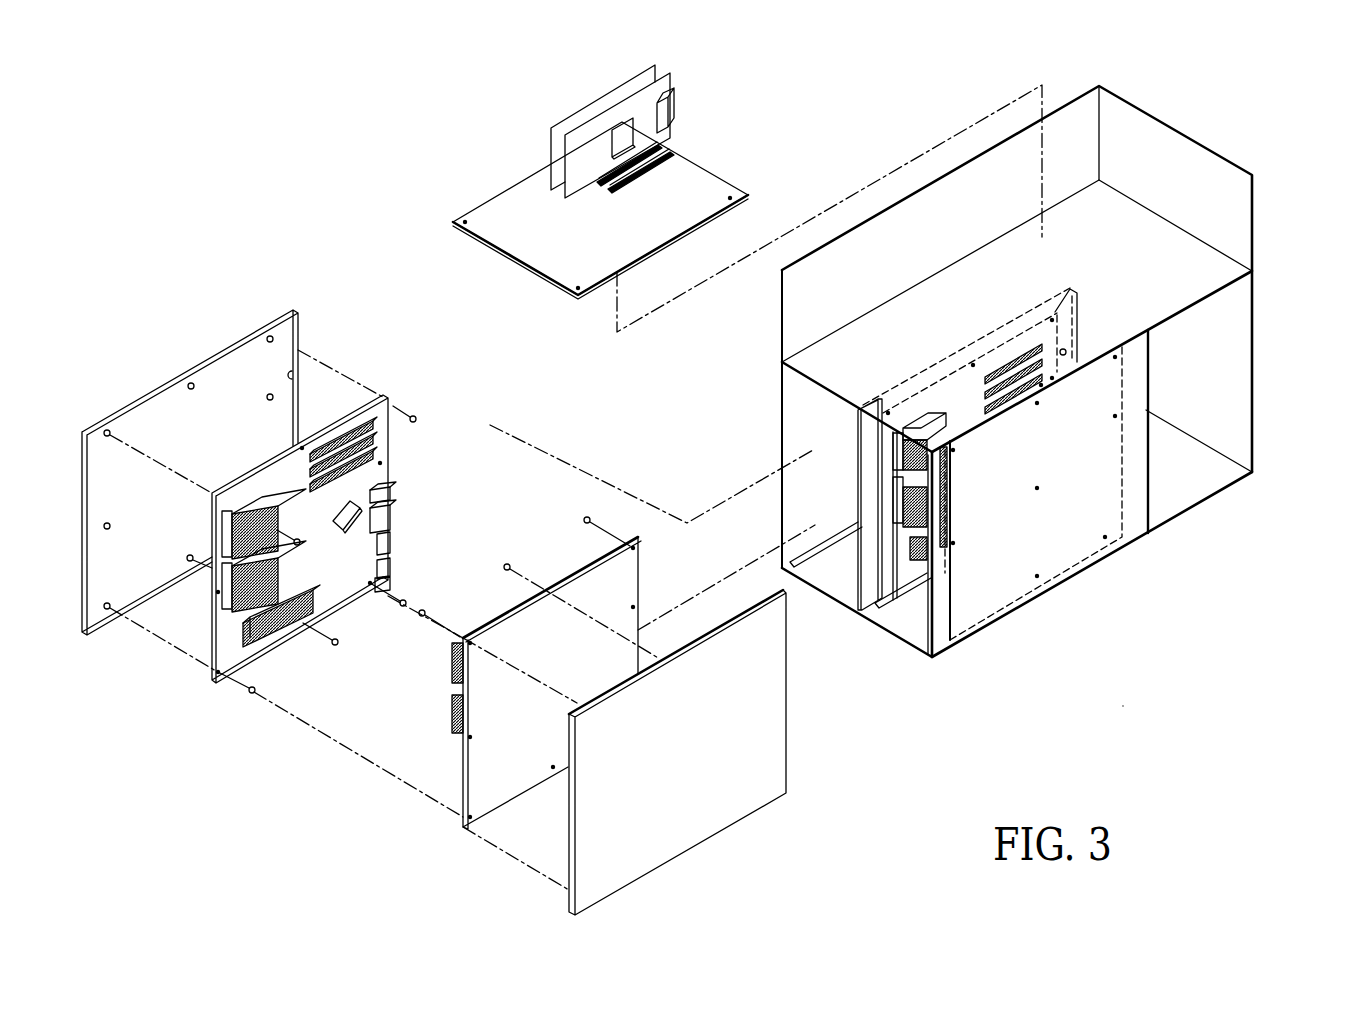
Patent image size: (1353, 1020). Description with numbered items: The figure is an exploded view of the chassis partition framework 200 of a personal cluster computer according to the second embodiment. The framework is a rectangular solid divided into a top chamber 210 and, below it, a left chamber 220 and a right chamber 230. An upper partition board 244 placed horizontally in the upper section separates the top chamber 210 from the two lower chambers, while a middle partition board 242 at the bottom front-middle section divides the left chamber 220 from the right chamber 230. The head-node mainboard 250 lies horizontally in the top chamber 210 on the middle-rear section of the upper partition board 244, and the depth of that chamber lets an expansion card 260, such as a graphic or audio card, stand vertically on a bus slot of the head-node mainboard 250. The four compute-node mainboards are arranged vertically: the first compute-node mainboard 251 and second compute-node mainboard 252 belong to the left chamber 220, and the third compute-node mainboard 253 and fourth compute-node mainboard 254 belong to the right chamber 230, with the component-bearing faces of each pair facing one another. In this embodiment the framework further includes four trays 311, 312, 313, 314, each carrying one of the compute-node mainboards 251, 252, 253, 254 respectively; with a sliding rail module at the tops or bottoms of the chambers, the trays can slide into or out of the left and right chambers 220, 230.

The chassis partition framework 200 is at (1126, 708).
The top chamber 210 is at (1158, 150).
The left chamber 220 is at (814, 414).
The right chamber 230 is at (914, 610).
The middle partition board 242 is at (853, 482).
The upper partition board 244 is at (1222, 258).
The head-node mainboard 250 is at (503, 210).
The first compute-node mainboard 251 is at (327, 590).
The second compute-node mainboard 252 is at (497, 637).
The third compute-node mainboard 253 is at (897, 599).
The fourth compute-node mainboard 254 is at (1133, 503).
The expansion card 260 is at (585, 120).
The tray 311 is at (210, 377).
The tray 312 is at (710, 810).
The tray 313 is at (860, 591).
The tray 314 is at (990, 588).